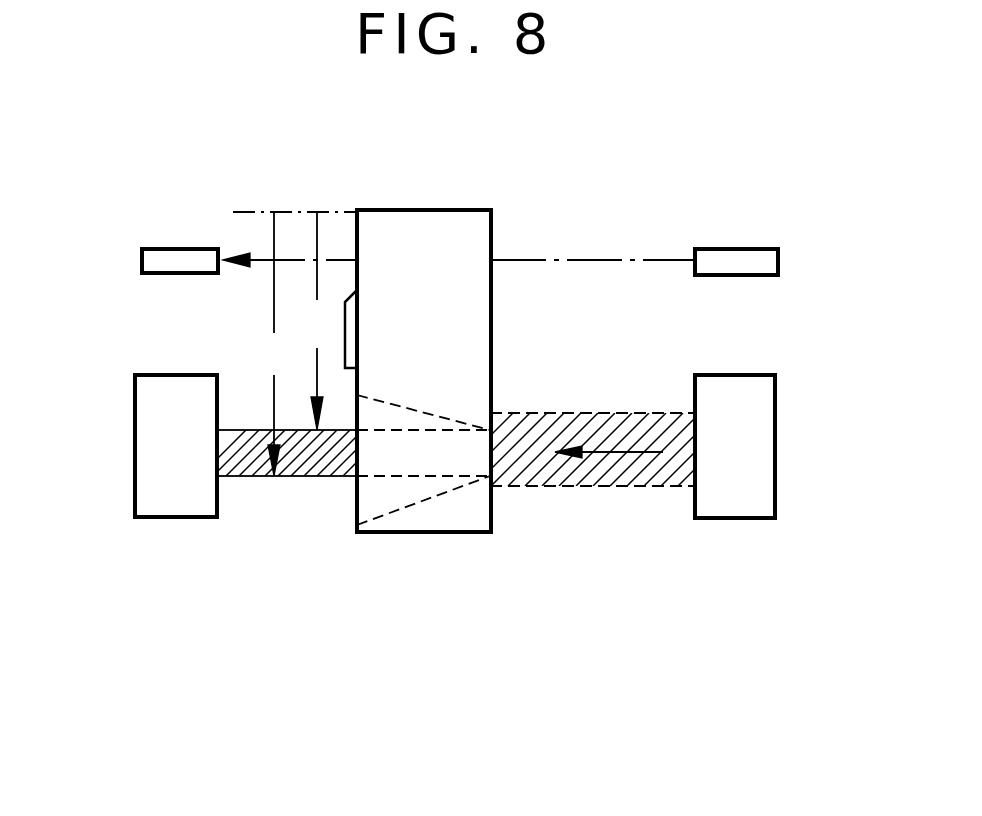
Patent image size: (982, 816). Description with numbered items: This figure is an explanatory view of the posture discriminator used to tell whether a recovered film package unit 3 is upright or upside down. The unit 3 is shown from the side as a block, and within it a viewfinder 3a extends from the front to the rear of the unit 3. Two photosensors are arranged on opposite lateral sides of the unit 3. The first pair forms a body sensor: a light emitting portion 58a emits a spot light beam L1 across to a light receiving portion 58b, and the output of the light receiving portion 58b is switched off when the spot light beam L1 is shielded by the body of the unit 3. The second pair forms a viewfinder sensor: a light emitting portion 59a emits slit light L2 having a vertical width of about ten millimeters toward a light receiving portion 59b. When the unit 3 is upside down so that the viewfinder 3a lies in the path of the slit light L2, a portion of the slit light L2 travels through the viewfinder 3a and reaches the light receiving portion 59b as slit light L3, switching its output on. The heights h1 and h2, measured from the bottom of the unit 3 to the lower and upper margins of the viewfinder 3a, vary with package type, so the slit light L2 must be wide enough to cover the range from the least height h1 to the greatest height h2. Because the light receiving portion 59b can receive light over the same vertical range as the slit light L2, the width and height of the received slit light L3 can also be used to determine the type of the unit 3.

The unit 3 is at (415, 210).
The viewfinder 3a is at (412, 505).
The light emitting portion 58a is at (778, 265).
The light receiving portion 58b is at (142, 262).
The light emitting portion 59a is at (775, 462).
The light receiving portion 59b is at (135, 495).
The spot light beam L1 is at (588, 258).
The slit light L2 is at (548, 413).
The slit light L3 is at (298, 483).
The height h1 is at (320, 321).
The height h2 is at (276, 344).